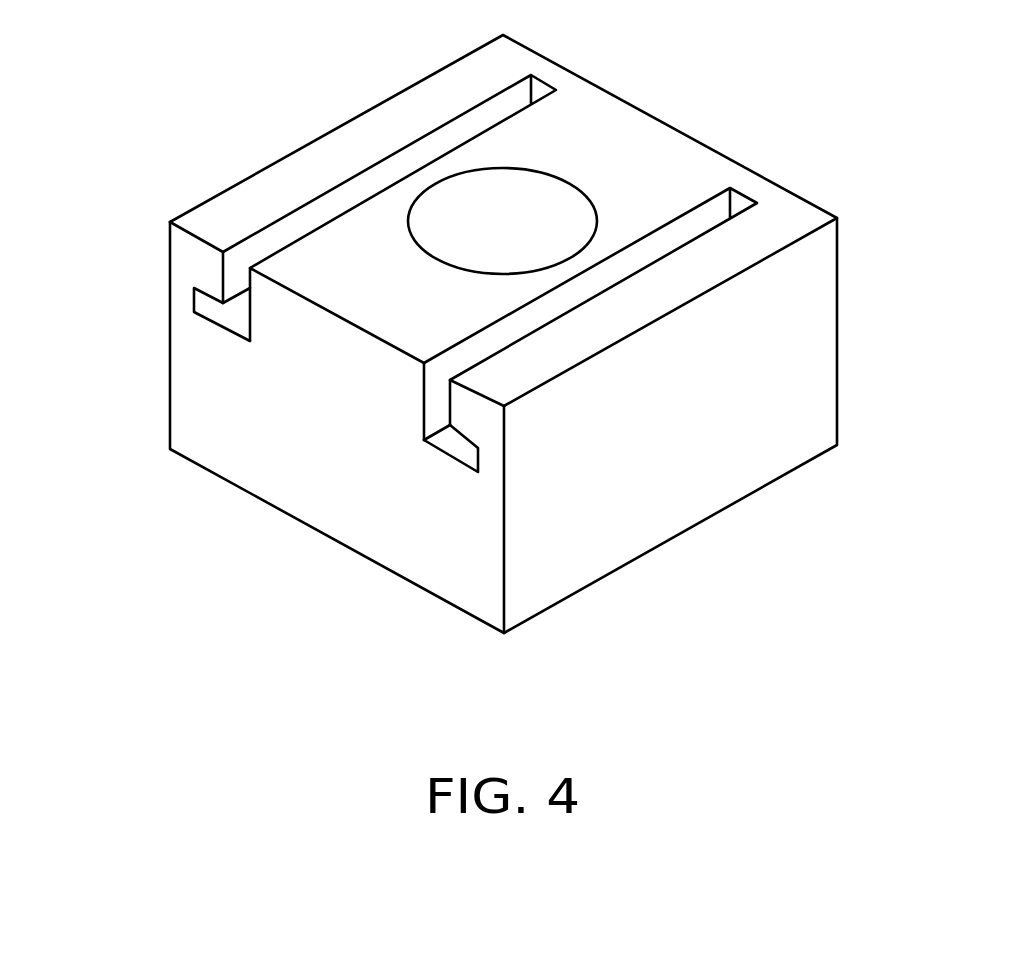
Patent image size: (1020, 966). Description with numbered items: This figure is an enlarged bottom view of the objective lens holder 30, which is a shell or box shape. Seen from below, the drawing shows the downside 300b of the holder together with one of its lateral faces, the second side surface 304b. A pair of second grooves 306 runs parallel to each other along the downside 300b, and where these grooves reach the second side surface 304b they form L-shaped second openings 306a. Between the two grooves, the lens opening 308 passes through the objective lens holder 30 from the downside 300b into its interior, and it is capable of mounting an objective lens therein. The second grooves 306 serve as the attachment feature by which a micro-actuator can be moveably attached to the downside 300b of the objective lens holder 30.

The objective lens holder 30 is at (472, 321).
The downside 300b is at (677, 175).
The second side surface 304b is at (323, 470).
The second grooves 306 is at (385, 178).
The second openings 306a is at (213, 310).
The lens opening 308 is at (538, 205).